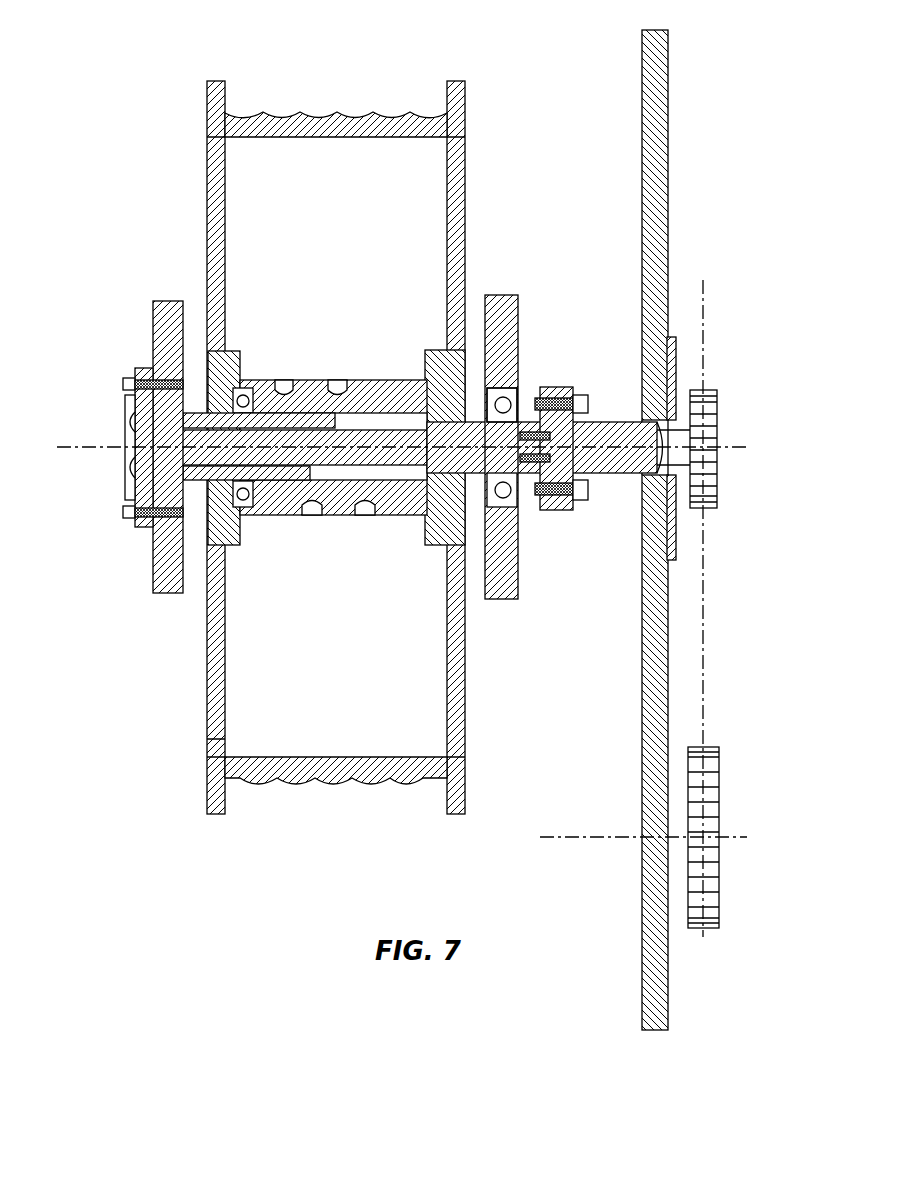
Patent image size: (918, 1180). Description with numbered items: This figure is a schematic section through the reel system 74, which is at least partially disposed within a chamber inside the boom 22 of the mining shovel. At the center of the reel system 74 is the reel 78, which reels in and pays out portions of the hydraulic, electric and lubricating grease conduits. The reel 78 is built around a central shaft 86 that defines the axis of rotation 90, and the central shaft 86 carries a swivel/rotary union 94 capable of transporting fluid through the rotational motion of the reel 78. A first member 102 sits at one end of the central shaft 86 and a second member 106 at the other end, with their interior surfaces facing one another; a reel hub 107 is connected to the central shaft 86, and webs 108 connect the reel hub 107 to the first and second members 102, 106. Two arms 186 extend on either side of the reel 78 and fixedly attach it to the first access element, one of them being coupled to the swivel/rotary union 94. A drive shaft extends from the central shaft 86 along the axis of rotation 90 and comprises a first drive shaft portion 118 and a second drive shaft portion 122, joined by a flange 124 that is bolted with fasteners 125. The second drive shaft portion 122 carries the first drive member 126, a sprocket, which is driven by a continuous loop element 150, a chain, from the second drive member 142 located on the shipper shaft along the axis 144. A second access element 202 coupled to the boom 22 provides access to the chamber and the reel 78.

The reel system 74 is at (318, 432).
The reel 78 is at (314, 795).
The central shaft 86 is at (362, 378).
The axis of rotation 90 is at (92, 446).
The swivel/rotary union 94 is at (133, 398).
The first member 102 is at (466, 795).
The second member 106 is at (207, 800).
The reel hub 107 is at (241, 538).
The webs 108 is at (331, 481).
The first drive shaft portion 118 is at (500, 430).
The second drive shaft portion 122 is at (630, 472).
The flange 124 is at (574, 409).
The fasteners 125 is at (588, 490).
The first drive member 126 is at (717, 410).
The second drive member 142 is at (720, 798).
The axis 144 is at (590, 835).
The continuous loop element 150 is at (705, 593).
The arms 186 is at (153, 563).
The second access element 202 is at (677, 347).
The boom 22 is at (641, 900).